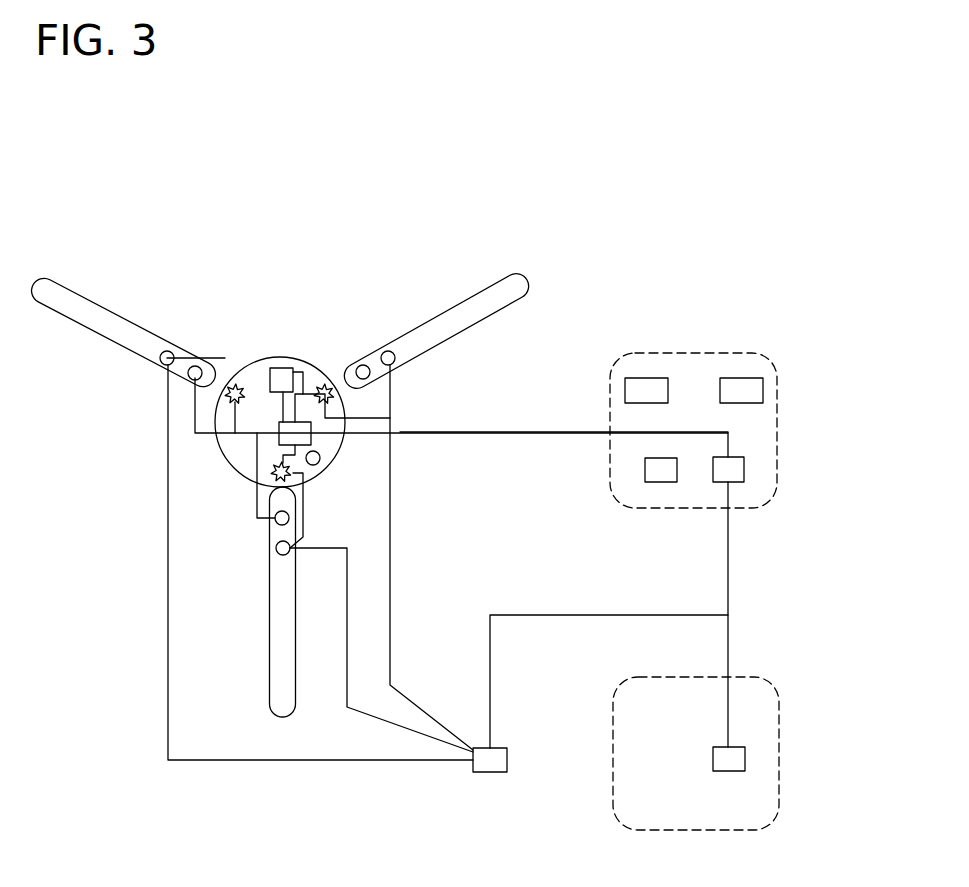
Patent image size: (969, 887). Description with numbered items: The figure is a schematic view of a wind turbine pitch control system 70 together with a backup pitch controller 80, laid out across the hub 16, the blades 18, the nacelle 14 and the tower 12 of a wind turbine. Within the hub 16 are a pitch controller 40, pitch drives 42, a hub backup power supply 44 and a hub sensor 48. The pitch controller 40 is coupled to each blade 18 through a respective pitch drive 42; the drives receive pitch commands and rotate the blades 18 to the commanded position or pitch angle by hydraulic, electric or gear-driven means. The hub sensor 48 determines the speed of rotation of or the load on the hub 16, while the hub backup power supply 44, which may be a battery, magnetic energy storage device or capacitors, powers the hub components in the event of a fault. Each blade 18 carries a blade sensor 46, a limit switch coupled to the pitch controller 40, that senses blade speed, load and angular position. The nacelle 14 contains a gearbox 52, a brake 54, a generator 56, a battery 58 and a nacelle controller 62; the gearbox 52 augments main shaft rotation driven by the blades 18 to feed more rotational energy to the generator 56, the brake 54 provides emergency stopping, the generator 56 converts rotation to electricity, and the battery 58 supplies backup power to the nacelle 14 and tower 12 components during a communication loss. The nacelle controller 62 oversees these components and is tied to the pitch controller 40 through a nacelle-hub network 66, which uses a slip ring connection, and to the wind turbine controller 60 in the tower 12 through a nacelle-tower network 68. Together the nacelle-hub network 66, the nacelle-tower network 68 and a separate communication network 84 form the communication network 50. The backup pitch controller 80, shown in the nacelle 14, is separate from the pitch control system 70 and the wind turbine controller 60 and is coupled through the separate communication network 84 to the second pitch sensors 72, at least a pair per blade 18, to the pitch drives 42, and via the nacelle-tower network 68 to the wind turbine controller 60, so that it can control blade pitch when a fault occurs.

The wind turbine pitch control system 70 is at (112, 185).
The blades 18 is at (97, 338).
The hub 16 is at (245, 366).
The hub backup power supply 44 is at (280, 368).
The pitch drive 42 is at (312, 380).
The pitch controller 40 is at (311, 438).
The blade sensor 46 is at (195, 381).
The hub sensor 48 is at (316, 465).
The second pitch sensors 72 is at (167, 350).
The nacelle-hub network 66 is at (520, 432).
The communication network 50 is at (488, 462).
The nacelle 14 is at (692, 352).
The gearbox 52 is at (640, 378).
The generator 56 is at (745, 378).
The brake 54 is at (700, 395).
The battery 58 is at (660, 482).
The nacelle controller 62 is at (744, 470).
The nacelle-tower network 68 is at (730, 565).
The backup pitch controller 80 is at (507, 757).
The separate communication network 84 is at (428, 786).
The tower 12 is at (742, 830).
The wind turbine controller 60 is at (713, 757).